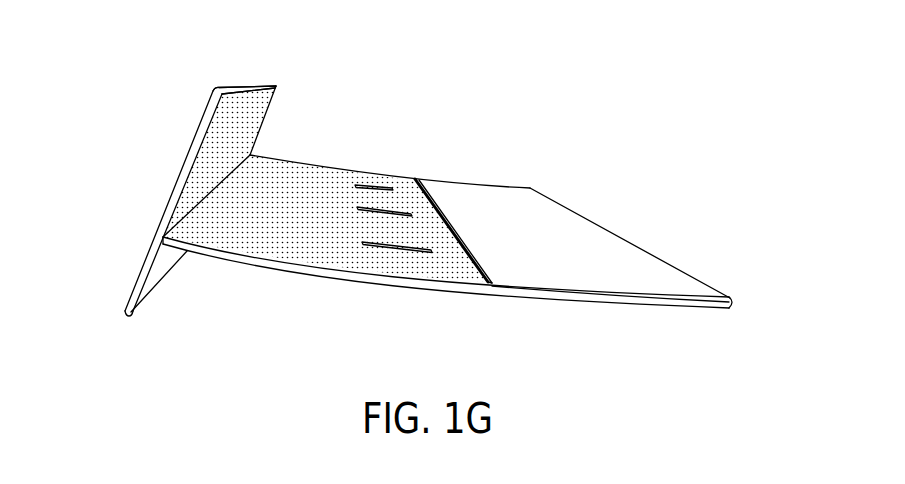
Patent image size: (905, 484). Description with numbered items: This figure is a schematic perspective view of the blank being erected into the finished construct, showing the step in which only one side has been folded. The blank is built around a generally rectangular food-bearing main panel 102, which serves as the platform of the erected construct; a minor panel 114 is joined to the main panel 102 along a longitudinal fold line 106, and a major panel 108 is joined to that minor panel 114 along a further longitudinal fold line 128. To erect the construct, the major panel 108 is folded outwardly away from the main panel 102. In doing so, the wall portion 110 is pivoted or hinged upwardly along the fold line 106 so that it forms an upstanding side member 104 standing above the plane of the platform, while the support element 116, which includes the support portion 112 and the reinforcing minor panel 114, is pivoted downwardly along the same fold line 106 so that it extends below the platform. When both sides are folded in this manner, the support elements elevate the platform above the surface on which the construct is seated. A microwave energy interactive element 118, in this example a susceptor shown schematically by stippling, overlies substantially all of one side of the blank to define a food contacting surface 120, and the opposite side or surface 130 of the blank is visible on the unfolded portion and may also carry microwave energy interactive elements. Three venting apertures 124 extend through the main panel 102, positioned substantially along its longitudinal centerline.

The main panel 102 is at (349, 283).
The upstanding side member 104 is at (220, 80).
The fold line 106 is at (195, 212).
The major panel 108 is at (183, 167).
The wall portion 110 is at (183, 127).
The support portion 112 is at (122, 263).
The minor panel 114 is at (161, 278).
The support element 116 is at (123, 333).
The microwave energy interactive element 118 is at (332, 179).
The food contacting surface 120 is at (296, 212).
The venting aperture 124 is at (377, 190).
The fold line 128 is at (733, 300).
The opposite side 130 is at (526, 224).